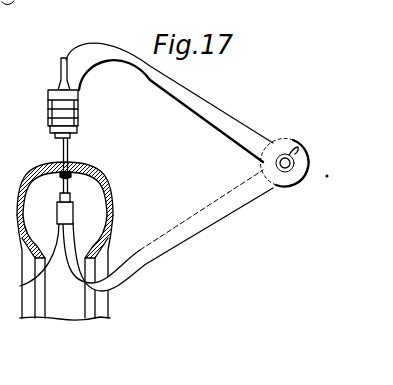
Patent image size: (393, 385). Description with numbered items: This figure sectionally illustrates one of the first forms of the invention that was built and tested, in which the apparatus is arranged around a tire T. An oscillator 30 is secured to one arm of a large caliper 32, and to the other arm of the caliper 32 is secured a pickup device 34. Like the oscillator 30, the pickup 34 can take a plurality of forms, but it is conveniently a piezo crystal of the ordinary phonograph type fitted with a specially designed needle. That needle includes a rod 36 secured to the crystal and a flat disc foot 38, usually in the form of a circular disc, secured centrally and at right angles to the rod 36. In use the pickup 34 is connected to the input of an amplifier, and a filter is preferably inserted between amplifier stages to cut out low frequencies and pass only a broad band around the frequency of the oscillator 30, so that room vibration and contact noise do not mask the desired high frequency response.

The oscillator 30 is at (80, 113).
The caliper 32 is at (200, 97).
The pickup device 34 is at (72, 213).
The rod 36 is at (72, 187).
The flat disc foot 38 is at (79, 163).
The tire T is at (43, 164).